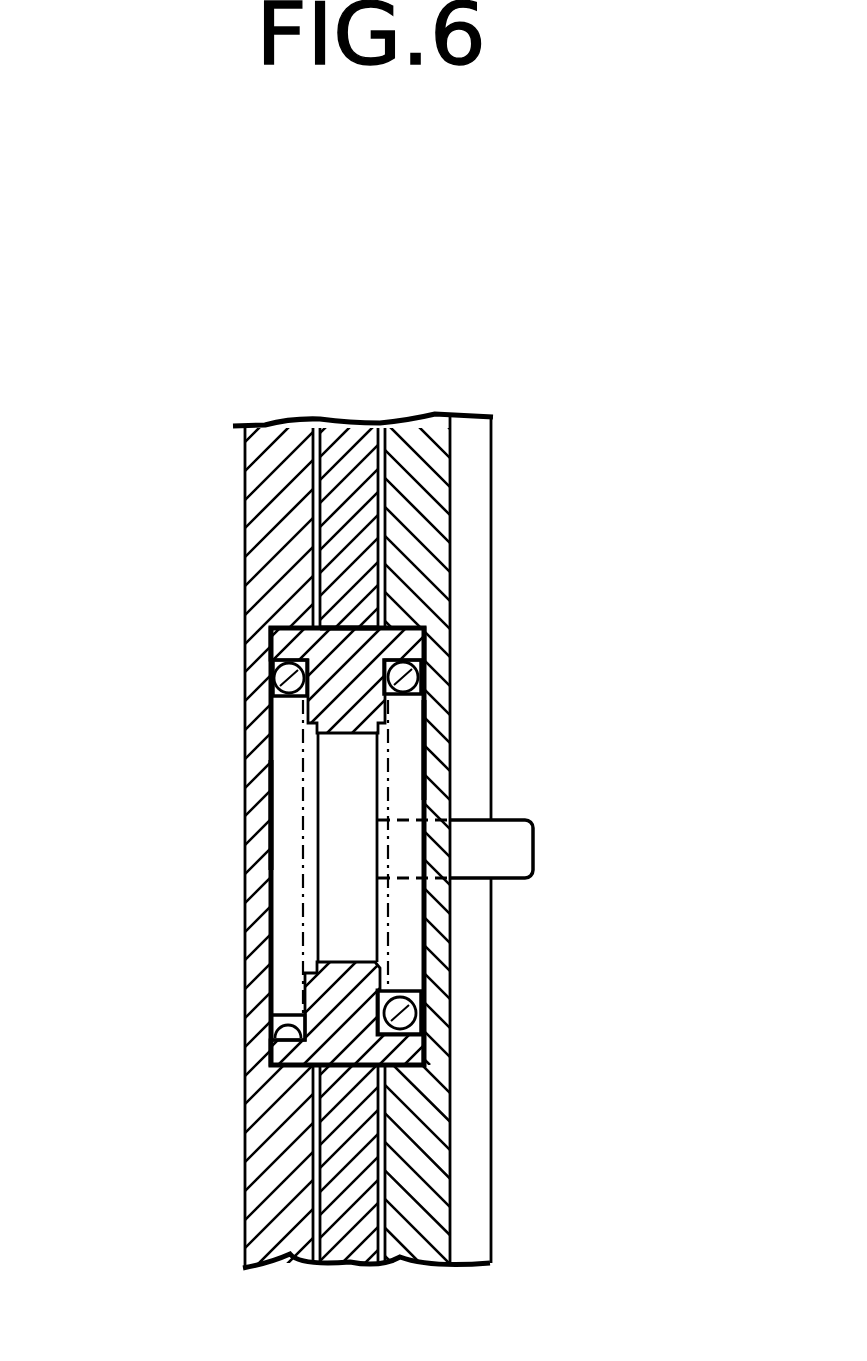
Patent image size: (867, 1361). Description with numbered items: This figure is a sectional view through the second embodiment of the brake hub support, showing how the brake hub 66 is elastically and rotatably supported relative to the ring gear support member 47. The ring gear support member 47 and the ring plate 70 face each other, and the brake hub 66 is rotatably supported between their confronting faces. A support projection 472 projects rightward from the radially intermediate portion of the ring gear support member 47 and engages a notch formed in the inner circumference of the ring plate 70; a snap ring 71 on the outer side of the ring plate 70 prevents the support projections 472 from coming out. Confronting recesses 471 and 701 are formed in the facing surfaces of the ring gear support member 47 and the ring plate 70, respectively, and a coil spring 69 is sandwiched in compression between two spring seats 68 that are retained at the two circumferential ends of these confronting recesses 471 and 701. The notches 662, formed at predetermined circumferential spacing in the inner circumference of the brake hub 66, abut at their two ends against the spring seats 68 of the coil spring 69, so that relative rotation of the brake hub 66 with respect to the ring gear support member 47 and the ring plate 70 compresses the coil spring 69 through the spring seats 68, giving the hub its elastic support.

The ring gear support member 47 is at (276, 405).
The brake hub 66 is at (348, 402).
The ring plate 70 is at (437, 396).
The snap ring 71 is at (473, 973).
The spring seat 68 is at (325, 705).
The coil spring 69 is at (283, 690).
The notch 662 is at (348, 630).
The recess 701 is at (424, 777).
The recess 471 is at (270, 792).
The support projection 472 is at (522, 850).